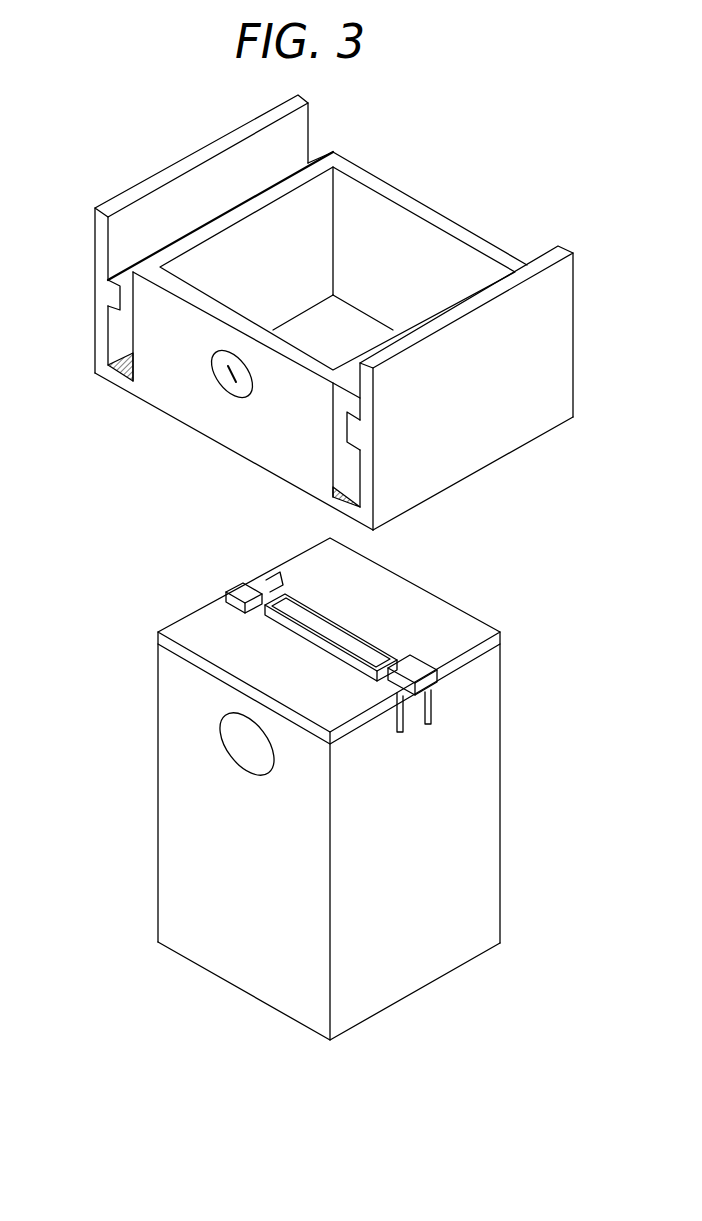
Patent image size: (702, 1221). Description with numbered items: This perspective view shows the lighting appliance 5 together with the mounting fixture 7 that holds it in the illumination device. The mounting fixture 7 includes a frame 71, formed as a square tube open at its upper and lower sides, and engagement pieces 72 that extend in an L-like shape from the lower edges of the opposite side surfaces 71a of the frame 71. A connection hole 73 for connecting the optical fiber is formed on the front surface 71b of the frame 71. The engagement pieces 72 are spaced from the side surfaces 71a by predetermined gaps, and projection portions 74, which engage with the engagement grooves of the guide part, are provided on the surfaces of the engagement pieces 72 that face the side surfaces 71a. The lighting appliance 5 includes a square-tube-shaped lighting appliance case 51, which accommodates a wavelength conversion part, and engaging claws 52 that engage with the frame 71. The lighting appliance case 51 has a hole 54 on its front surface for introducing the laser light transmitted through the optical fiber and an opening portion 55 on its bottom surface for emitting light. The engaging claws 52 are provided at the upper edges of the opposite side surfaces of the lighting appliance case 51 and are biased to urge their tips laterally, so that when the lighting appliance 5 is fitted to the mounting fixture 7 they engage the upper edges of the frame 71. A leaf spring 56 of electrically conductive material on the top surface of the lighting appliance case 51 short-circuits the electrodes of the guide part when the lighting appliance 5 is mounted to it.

The mounting fixture 7 is at (100, 185).
The frame 71 is at (418, 193).
The side surfaces 71a is at (310, 220).
The front surface 71b is at (247, 435).
The engagement pieces 72 is at (92, 247).
The connection hole 73 is at (228, 390).
The projection portions 74 is at (108, 300).
The lighting appliance 5 is at (128, 620).
The lighting appliance case 51 is at (507, 802).
The engaging claws 52 is at (240, 578).
The hole 54 is at (243, 748).
The opening portion 55 is at (268, 1007).
The leaf spring 56 is at (340, 633).